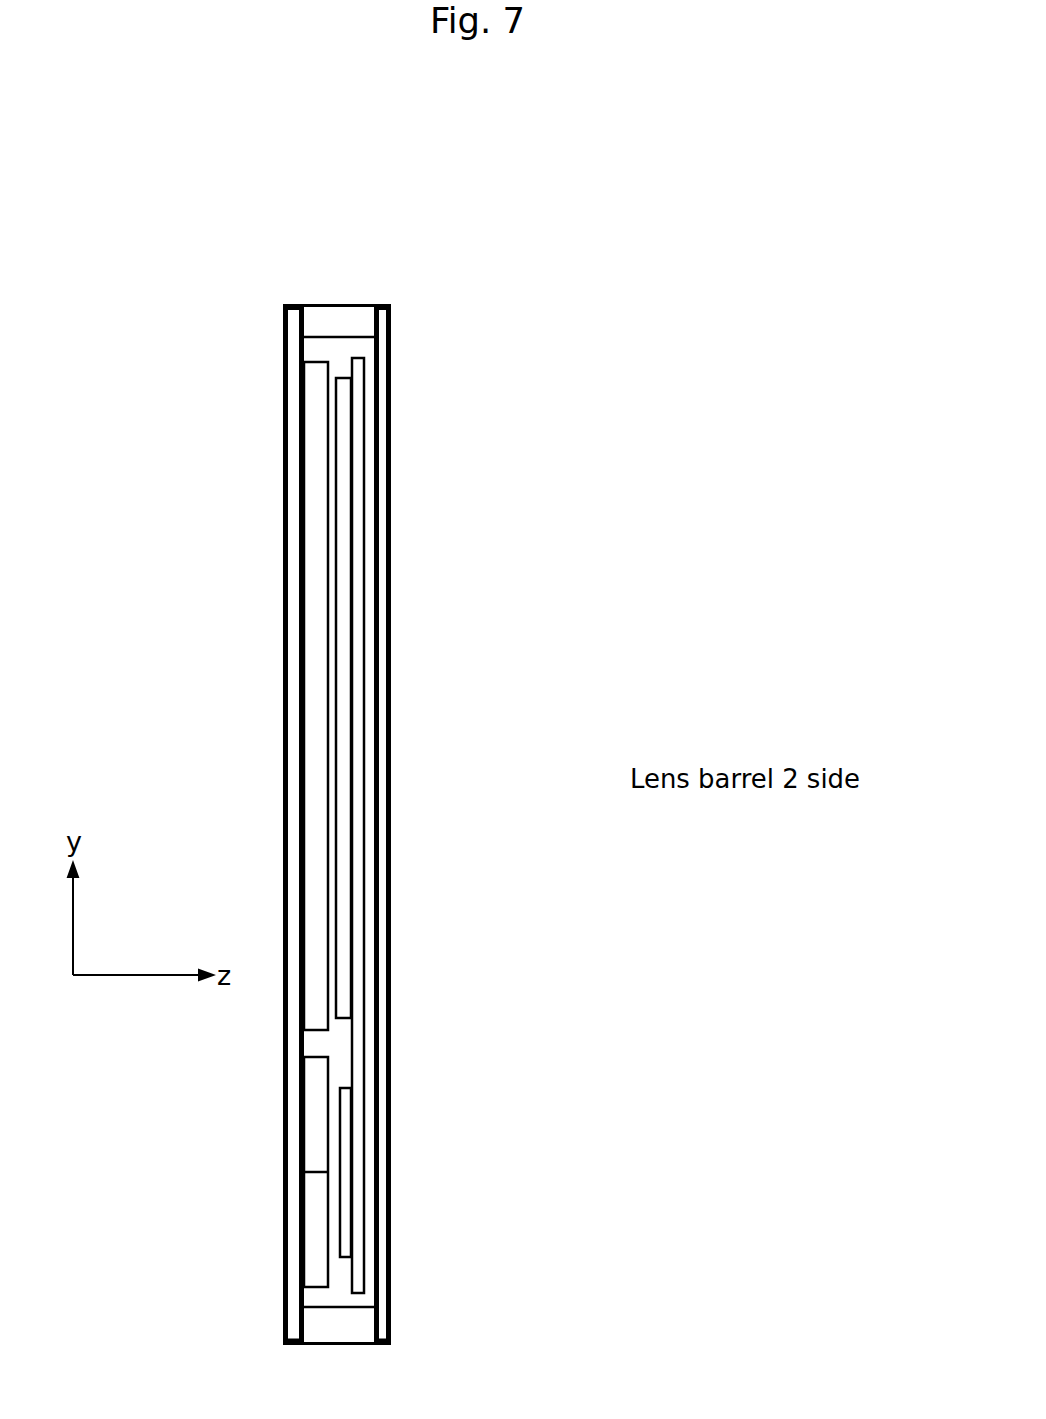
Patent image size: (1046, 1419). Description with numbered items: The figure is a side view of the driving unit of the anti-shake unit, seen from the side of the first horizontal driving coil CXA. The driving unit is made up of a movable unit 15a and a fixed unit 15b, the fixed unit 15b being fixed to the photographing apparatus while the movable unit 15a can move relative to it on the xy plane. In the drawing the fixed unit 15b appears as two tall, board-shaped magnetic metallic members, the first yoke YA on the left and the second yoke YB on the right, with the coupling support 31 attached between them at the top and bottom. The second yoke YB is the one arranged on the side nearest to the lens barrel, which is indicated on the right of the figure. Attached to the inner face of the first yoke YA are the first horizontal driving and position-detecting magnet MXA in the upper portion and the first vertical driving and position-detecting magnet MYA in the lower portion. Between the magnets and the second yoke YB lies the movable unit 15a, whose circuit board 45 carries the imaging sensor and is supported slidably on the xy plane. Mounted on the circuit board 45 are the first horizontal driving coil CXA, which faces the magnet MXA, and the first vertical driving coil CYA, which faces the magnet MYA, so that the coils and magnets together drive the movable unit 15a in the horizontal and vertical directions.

The coupling support 31 is at (322, 303).
The first yoke YA is at (296, 305).
The second yoke YB is at (393, 305).
The first horizontal driving and position-detecting magnet MXA is at (320, 410).
The first vertical driving and position-detecting magnet MYA is at (312, 1130).
The first horizontal driving coil CXA is at (343, 440).
The first vertical driving coil CYA is at (345, 1102).
The circuit board 45 is at (355, 397).
The movable unit 15a is at (339, 717).
The fixed unit 15b is at (323, 602).